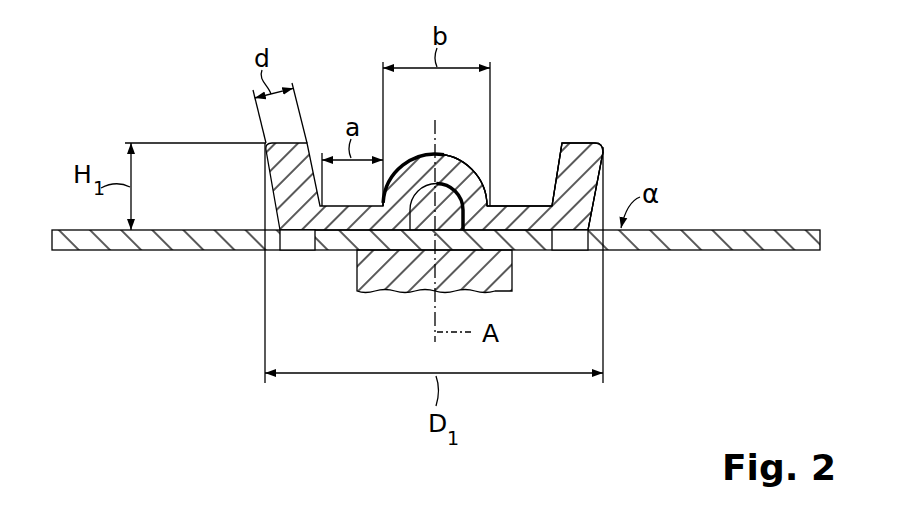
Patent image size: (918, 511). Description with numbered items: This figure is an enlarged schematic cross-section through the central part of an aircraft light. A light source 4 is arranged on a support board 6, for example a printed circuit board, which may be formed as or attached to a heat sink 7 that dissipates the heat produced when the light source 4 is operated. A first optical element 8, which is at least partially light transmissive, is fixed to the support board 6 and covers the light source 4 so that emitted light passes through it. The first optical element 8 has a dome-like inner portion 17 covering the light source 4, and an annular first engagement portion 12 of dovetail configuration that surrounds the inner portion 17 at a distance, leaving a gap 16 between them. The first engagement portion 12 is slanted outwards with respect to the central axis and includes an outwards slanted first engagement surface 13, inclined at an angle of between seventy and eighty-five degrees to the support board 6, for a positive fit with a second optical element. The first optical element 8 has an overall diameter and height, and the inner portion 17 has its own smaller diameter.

The light source 4 is at (432, 184).
The support board 6 is at (763, 229).
The heat sink 7 is at (344, 285).
The first optical element 8 is at (510, 97).
The first engagement portion 12 is at (627, 137).
The first engagement surface 13 is at (603, 200).
The gap 16 is at (530, 150).
The inner portion 17 is at (449, 155).